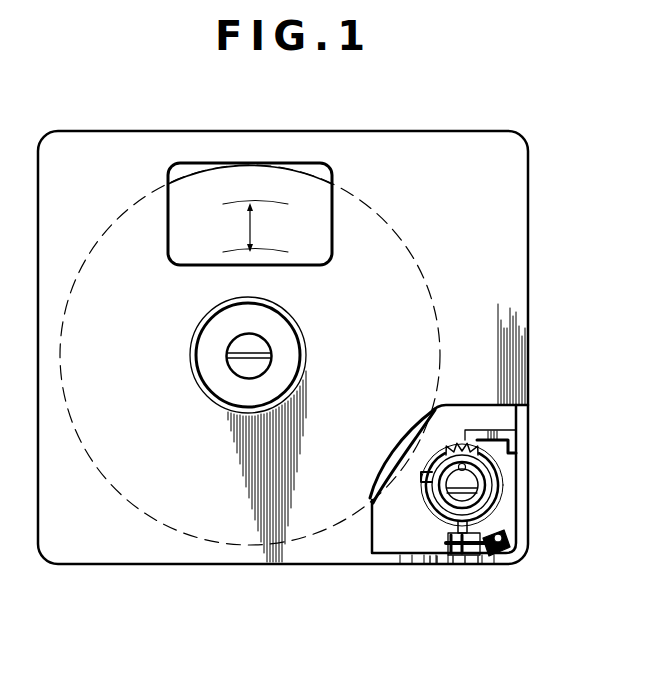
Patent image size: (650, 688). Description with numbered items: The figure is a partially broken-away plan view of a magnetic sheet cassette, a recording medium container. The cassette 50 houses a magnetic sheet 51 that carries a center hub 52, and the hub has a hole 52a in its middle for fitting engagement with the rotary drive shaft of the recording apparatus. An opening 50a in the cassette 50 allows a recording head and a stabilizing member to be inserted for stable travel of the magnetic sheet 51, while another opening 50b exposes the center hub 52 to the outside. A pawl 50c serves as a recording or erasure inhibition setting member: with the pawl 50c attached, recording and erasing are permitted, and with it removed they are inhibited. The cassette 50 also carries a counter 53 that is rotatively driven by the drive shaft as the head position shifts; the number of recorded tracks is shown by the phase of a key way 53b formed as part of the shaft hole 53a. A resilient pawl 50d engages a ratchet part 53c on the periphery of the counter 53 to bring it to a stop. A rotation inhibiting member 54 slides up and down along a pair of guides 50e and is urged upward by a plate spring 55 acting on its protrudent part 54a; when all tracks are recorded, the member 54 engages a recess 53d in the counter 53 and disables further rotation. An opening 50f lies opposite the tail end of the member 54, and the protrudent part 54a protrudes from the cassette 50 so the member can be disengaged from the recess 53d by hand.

The cassette 50 is at (451, 142).
The opening 50a is at (312, 168).
The opening 50b is at (213, 403).
The pawl 50c is at (433, 567).
The resilient pawl 50d is at (508, 432).
The guides 50e is at (453, 560).
The opening 50f is at (465, 567).
The magnetic sheet 51 is at (245, 172).
The center hub 52 is at (212, 338).
The hole 52a is at (238, 368).
The counter 53 is at (488, 479).
The shaft hole 53a is at (477, 497).
The key way 53b is at (513, 458).
The ratchet part 53c is at (453, 442).
The recess 53d is at (435, 474).
The rotation inhibiting member 54 is at (455, 541).
The protrudent part 54a is at (500, 536).
The plate spring 55 is at (487, 549).